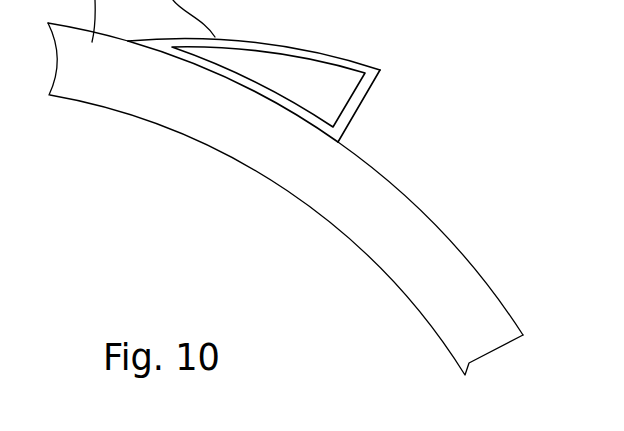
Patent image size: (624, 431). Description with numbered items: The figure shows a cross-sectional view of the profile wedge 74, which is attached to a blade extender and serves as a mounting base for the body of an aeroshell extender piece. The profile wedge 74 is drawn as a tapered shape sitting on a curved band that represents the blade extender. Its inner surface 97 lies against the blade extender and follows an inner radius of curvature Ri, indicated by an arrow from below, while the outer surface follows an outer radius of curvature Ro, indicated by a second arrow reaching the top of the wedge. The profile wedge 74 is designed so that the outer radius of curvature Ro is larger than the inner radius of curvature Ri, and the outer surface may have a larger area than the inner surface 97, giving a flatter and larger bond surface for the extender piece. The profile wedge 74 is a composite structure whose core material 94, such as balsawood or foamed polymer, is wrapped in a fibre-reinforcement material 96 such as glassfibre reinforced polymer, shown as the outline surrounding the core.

The profile wedge 74 is at (358, 56).
The core material 94 is at (340, 88).
The fibre-reinforcement material 96 is at (360, 100).
The inner surface 97 is at (190, 64).
The inner radius of curvature Ri is at (241, 95).
The outer radius of curvature Ro is at (282, 52).